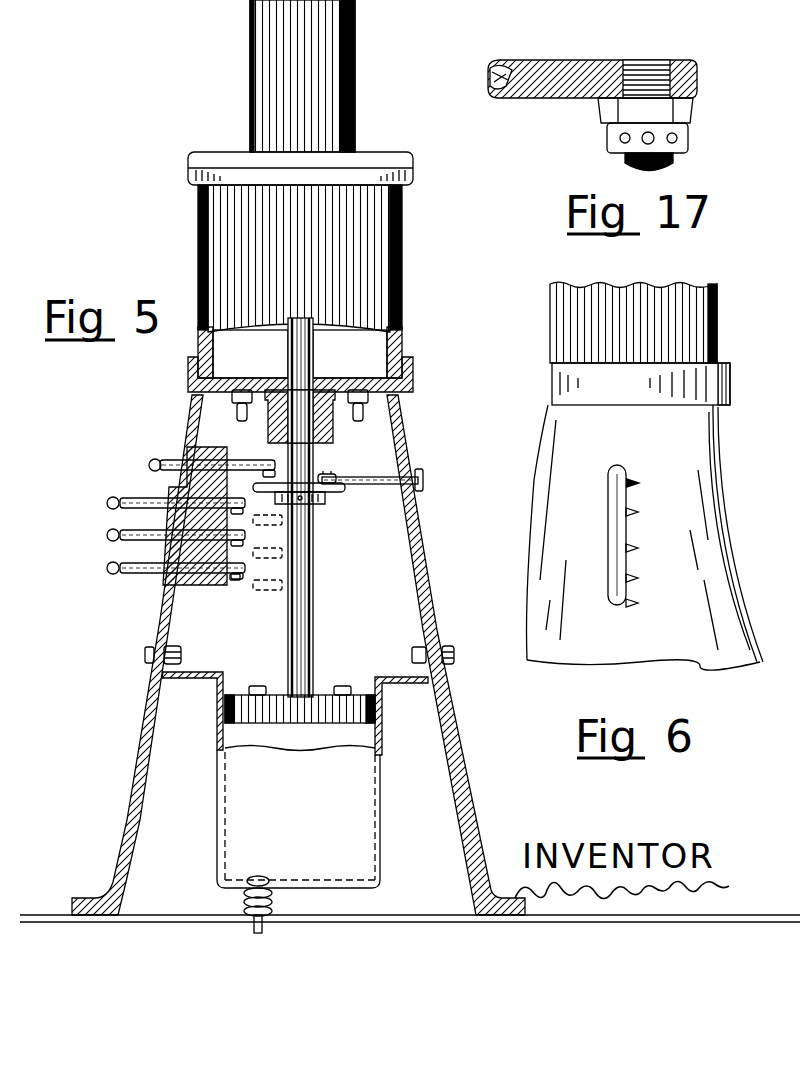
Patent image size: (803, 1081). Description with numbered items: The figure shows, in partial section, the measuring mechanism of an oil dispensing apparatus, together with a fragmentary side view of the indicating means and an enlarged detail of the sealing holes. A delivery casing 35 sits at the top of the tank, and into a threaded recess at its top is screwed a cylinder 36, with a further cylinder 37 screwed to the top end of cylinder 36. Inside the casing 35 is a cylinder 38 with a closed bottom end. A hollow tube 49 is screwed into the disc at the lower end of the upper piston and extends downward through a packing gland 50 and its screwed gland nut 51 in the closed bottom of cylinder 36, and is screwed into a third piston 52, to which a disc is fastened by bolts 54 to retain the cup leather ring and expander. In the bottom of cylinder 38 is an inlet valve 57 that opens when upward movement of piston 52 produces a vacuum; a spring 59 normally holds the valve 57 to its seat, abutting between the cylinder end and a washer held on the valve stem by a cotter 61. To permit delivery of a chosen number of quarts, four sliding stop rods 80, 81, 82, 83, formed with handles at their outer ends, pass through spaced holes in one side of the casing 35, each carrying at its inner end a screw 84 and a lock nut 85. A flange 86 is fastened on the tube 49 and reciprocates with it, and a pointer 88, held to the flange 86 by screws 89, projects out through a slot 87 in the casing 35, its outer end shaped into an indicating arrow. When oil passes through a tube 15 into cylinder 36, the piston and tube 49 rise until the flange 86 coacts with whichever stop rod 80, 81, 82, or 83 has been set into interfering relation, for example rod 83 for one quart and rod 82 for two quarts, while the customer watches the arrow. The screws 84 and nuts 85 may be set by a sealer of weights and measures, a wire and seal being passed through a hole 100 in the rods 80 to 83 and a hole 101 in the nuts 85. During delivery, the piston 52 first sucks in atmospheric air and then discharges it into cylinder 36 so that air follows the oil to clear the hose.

In FIG. 5, the tube 15 is at (366, 411).
In FIG. 5, the delivery casing 35 is at (146, 651).
In FIG. 6, the delivery casing 35 is at (524, 590).
In FIG. 5, the cylinder 36 is at (402, 264).
In FIG. 6, the cylinder 36 is at (721, 330).
In FIG. 5, the cylinder 37 is at (357, 43).
In FIG. 5, the cylinder 38 is at (216, 770).
In FIG. 5, the hollow tube 49 is at (313, 352).
In FIG. 5, the packing gland 50 is at (280, 383).
In FIG. 5, the gland nut 51 is at (267, 438).
In FIG. 5, the third piston 52 is at (324, 692).
In FIG. 5, the bolts 54 is at (259, 688).
In FIG. 5, the inlet valve 57 is at (264, 877).
In FIG. 5, the spring 59 is at (274, 905).
In FIG. 5, the cotter 61 is at (254, 929).
In FIG. 5, the sliding stop rod 80 is at (157, 460).
In FIG. 5, the sliding stop rod 81 is at (107, 500).
In FIG. 5, the sliding stop rod 82 is at (107, 534).
In FIG. 5, the sliding stop rod 83 is at (107, 567).
In FIG. 5, the screw 84 is at (234, 575).
In FIG. 5, the lock nut 85 is at (243, 577).
In FIG. 5, the flange 86 is at (336, 494).
In FIG. 6, the slot 87 is at (610, 590).
In FIG. 5, the pointer 88 is at (422, 474).
In FIG. 5, the screws 89 is at (337, 477).
In FIG. 17, the hole 100 is at (604, 76).
In FIG. 17, the hole 101 is at (665, 137).